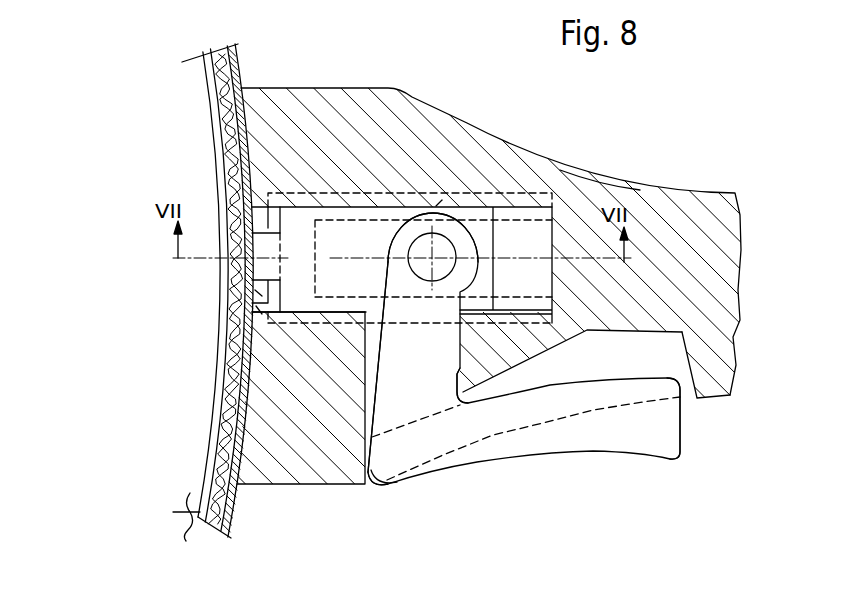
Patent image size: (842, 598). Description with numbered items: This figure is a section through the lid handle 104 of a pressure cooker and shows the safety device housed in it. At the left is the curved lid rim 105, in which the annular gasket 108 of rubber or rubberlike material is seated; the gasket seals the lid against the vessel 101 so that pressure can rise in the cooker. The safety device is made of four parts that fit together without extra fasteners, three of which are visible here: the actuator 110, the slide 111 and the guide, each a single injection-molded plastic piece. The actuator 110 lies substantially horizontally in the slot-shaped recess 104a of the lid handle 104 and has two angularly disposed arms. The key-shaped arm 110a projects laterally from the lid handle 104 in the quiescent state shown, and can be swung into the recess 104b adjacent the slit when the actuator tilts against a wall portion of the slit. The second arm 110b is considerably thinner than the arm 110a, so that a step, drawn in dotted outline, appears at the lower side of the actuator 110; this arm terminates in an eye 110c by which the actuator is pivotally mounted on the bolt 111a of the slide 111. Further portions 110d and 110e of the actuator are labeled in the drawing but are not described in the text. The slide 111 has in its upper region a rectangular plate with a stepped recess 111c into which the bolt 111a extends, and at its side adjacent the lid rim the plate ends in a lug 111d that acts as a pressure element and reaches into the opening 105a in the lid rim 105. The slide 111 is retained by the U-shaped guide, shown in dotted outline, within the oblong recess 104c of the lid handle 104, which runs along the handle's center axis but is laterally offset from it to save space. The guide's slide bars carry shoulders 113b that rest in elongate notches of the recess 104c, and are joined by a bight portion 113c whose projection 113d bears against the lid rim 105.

The vessel 101 is at (178, 532).
The lid handle 104 is at (470, 147).
The slot-shaped recess 104a is at (370, 378).
The recess 104b is at (682, 372).
The oblong recess 104c is at (590, 200).
The lid rim 105 is at (237, 80).
The opening 105a is at (250, 249).
The annular gasket 108 is at (216, 60).
The actuator 110 is at (578, 440).
The key-shaped arm 110a is at (663, 450).
The second arm 110b is at (390, 402).
The eye 110c is at (457, 232).
The lever foot 110d is at (462, 383).
The lever tip 110e is at (381, 484).
The slide 111 is at (328, 238).
The bolt 111a is at (430, 245).
The stepped recess 111c is at (377, 234).
The lug 111d is at (265, 268).
The shoulders 113b is at (437, 205).
The bight portion 113c is at (260, 312).
The projection 113d is at (258, 293).